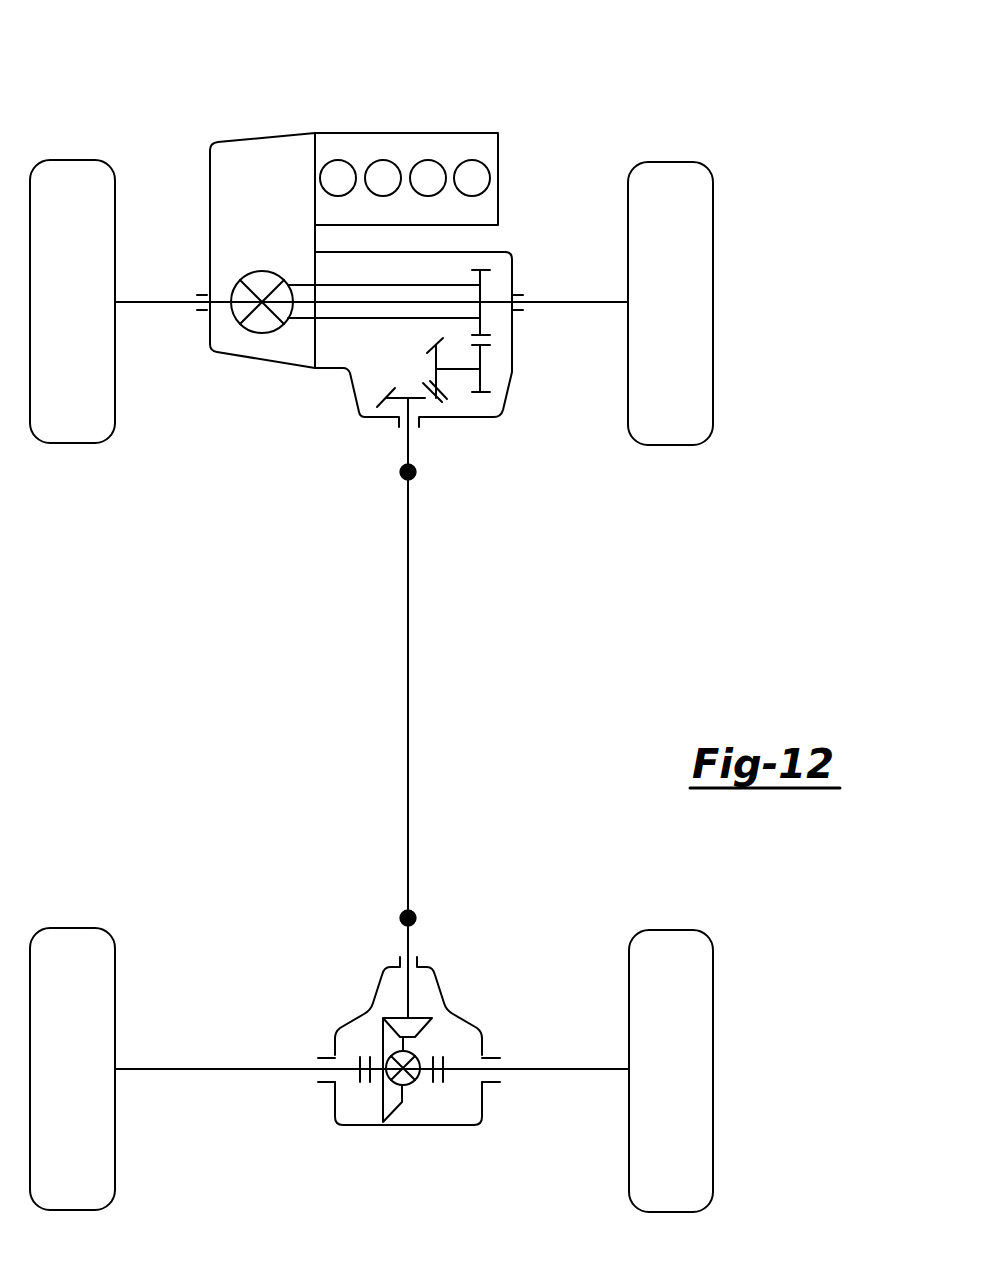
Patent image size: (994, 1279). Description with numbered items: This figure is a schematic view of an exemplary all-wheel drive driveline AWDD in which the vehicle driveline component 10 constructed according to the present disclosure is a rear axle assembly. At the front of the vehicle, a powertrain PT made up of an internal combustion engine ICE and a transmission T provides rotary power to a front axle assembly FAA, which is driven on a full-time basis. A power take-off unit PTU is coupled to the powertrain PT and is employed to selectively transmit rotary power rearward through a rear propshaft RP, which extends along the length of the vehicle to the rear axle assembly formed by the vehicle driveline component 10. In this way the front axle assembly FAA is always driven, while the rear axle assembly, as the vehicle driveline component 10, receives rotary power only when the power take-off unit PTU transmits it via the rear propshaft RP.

The powertrain PT is at (185, 70).
The transmission T is at (282, 158).
The internal combustion engine ICE is at (417, 143).
The front axle assembly FAA is at (252, 346).
The power take-off unit PTU is at (477, 407).
The all-wheel drive driveline AWDD is at (500, 605).
The rear propshaft RP is at (408, 788).
The vehicle driveline component 10 is at (493, 962).